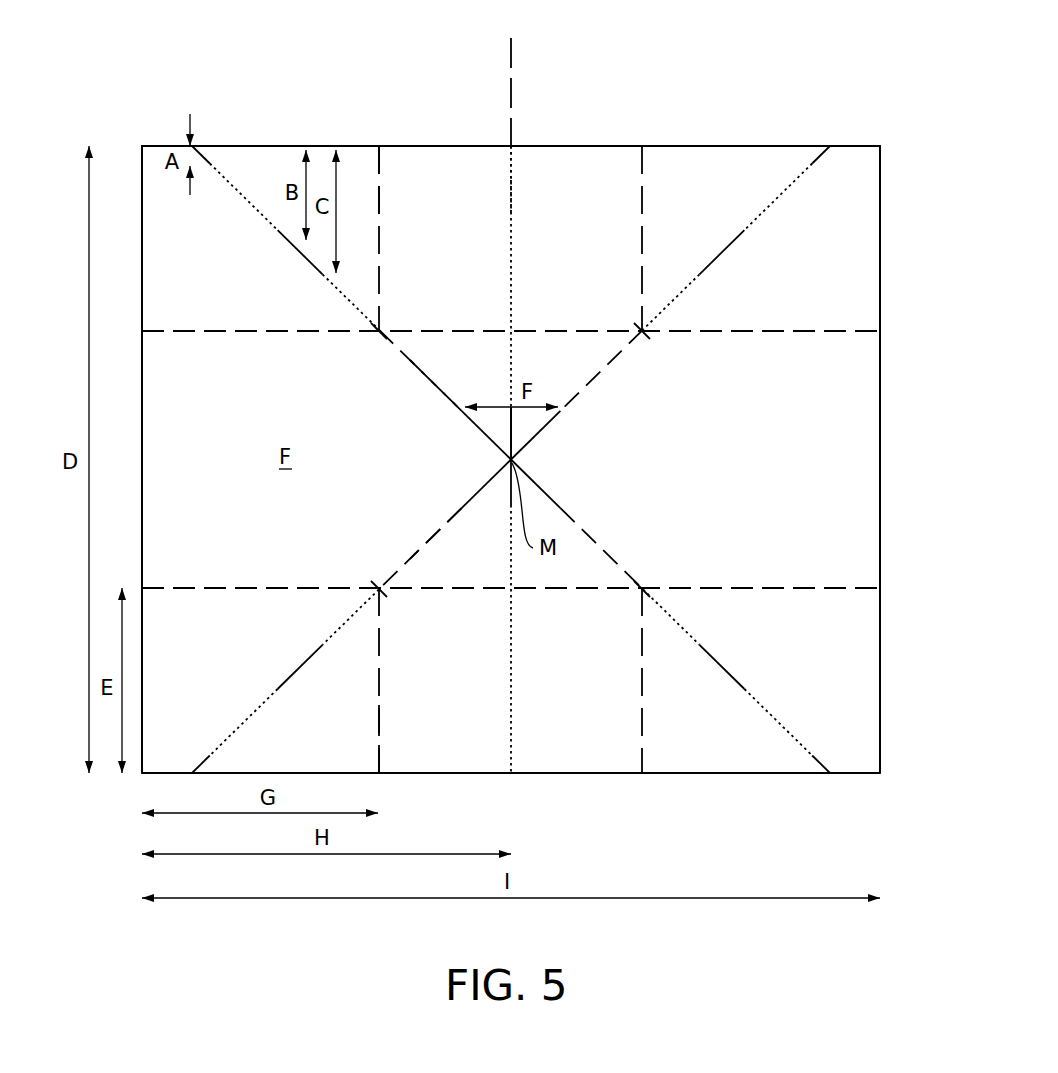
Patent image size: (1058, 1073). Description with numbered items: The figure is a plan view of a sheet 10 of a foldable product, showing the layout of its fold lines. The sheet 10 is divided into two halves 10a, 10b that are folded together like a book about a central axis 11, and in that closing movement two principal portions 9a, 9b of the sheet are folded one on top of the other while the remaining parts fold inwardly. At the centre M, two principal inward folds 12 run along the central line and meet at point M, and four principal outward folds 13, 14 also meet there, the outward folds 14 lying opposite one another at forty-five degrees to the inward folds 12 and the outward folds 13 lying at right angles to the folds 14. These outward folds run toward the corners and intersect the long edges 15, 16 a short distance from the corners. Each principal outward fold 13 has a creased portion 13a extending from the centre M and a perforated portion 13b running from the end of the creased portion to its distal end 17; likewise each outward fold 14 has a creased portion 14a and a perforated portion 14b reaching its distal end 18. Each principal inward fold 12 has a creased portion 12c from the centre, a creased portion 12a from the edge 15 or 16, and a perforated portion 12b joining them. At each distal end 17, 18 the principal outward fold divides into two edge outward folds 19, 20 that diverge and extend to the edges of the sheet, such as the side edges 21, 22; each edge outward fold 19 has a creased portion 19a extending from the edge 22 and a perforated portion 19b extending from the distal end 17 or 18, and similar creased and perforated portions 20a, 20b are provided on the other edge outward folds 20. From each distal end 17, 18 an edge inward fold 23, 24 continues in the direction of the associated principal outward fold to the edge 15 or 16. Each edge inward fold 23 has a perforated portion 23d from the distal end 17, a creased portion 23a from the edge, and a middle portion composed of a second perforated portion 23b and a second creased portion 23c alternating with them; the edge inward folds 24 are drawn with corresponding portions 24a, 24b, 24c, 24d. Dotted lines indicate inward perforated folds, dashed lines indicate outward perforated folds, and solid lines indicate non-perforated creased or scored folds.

The principal portion of the sheet 9a is at (163, 396).
The principal portion of the sheet 9b is at (840, 470).
The sheet 10 is at (803, 137).
The half of the sheet 10a is at (160, 197).
The half of the sheet 10b is at (845, 292).
The central axis 11 is at (514, 63).
The principal inward fold 12 is at (517, 236).
The creased portion 12a is at (513, 153).
The perforated portion 12b is at (513, 190).
The creased portion 12c is at (510, 432).
The principal outward fold 13 is at (410, 570).
The creased portion 13a is at (546, 430).
The perforated portion 13b is at (610, 375).
The principal outward fold 14 is at (395, 326).
The creased portion 14a is at (482, 431).
The perforated portion 14b is at (428, 380).
The long edge 15 is at (355, 146).
The long edge 16 is at (432, 775).
The distal end 17 is at (640, 330).
The distal end 18 is at (393, 322).
The edge outward fold 19 is at (320, 333).
The creased portion 19a is at (155, 333).
The perforated portion 19b is at (238, 333).
The edge outward fold 20 is at (380, 243).
The first segment of vertical fold line 20a is at (380, 155).
The second segment of vertical fold line 20b is at (380, 198).
The right side edge 21 is at (880, 547).
The edge of the sheet 22 is at (142, 478).
The edge inward fold 23 is at (785, 208).
The creased portion 23a is at (205, 760).
The perforated portion 23b is at (255, 698).
The creased portion 23c is at (312, 658).
The perforated portion 23d is at (346, 625).
The edge inward fold 24 is at (790, 718).
The corner solid segment of fold line 24 24a is at (207, 152).
The dotted segment of fold line 24 24b is at (247, 205).
The solid segment of fold line 24 24c is at (293, 245).
The dotted segment of fold line 24 24d is at (333, 290).